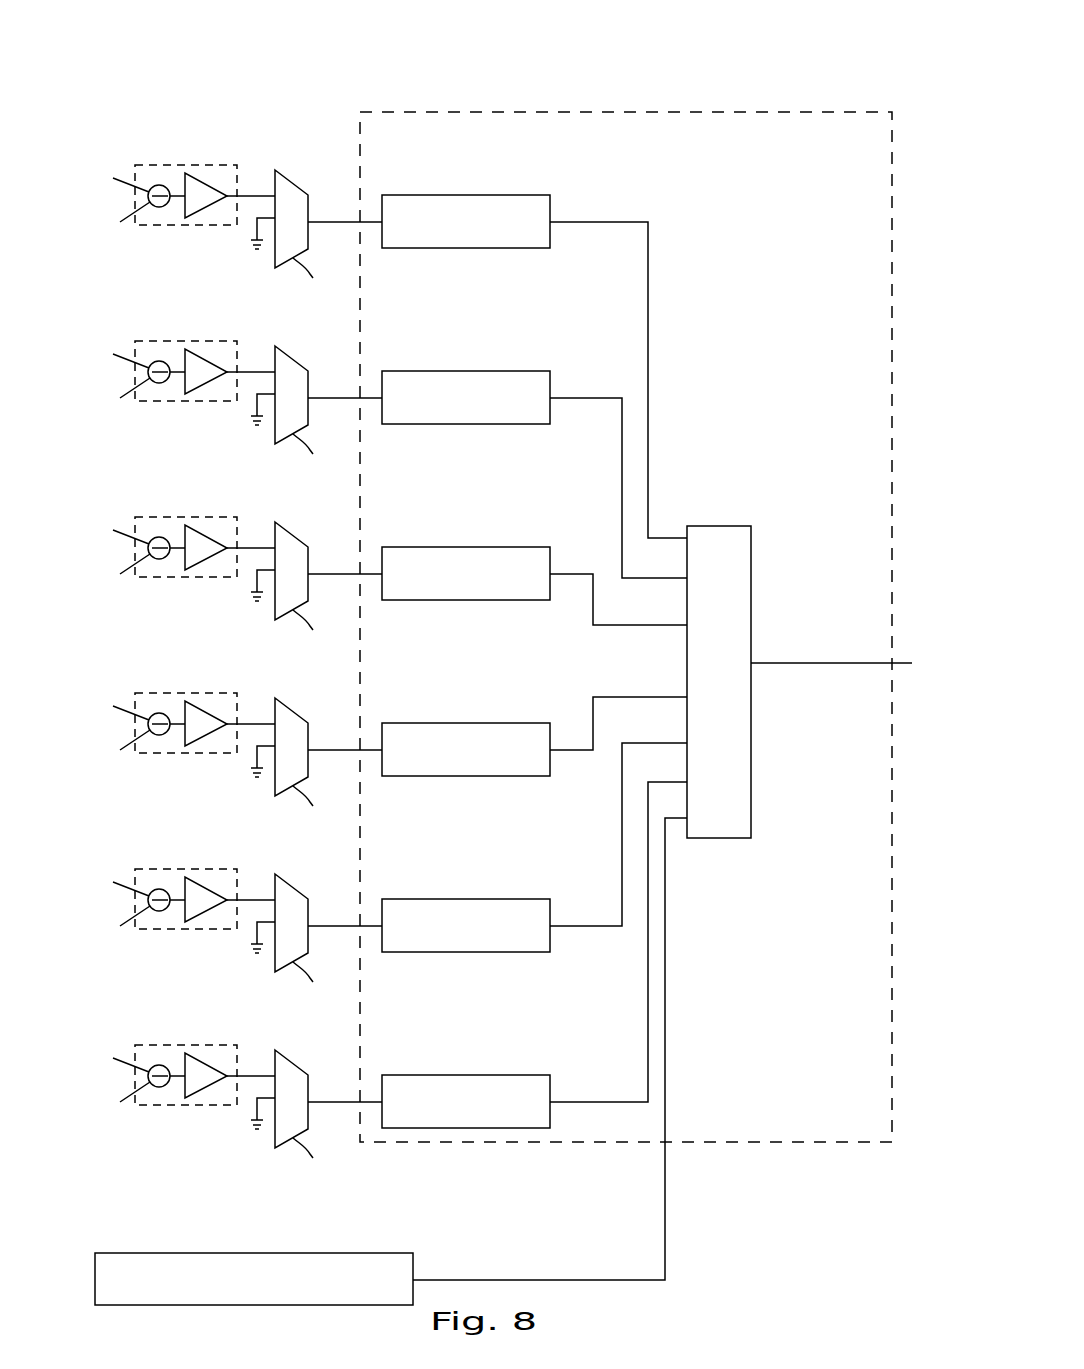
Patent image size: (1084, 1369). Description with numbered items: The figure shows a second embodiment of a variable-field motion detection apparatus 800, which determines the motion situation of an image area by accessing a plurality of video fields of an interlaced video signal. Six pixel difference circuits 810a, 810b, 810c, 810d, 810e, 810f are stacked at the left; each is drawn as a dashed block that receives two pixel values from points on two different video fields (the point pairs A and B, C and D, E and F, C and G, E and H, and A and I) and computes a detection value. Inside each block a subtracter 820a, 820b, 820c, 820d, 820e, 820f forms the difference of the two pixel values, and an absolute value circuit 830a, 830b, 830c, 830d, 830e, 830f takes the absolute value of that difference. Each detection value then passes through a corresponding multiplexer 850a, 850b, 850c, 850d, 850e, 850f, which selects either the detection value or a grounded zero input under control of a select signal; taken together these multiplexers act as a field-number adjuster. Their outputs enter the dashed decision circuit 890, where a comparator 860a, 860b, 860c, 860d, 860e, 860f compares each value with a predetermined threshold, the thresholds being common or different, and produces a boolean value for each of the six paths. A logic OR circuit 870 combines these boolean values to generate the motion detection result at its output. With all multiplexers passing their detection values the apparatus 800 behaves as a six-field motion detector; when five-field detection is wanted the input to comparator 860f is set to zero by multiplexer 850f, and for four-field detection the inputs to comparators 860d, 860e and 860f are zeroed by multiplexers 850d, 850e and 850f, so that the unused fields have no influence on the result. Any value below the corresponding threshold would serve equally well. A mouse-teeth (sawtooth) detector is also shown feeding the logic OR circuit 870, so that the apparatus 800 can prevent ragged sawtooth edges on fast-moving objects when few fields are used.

The variable-field motion detection apparatus 800 is at (771, 79).
The pixel difference circuit 810a is at (170, 165).
The pixel difference circuit 810b is at (186, 341).
The pixel difference circuit 810c is at (186, 517).
The pixel difference circuit 810d is at (186, 693).
The pixel difference circuit 810e is at (186, 869).
The pixel difference circuit 810f is at (186, 1045).
The subtracter 820a is at (155, 187).
The subtracter 820b is at (126, 341).
The subtracter 820c is at (126, 517).
The subtracter 820d is at (126, 693).
The subtracter 820e is at (126, 869).
The subtracter 820f is at (126, 1045).
The absolute value circuit 830a is at (207, 185).
The absolute value circuit 830b is at (228, 336).
The absolute value circuit 830c is at (228, 512).
The absolute value circuit 830d is at (228, 688).
The absolute value circuit 830e is at (228, 864).
The absolute value circuit 830f is at (229, 1040).
The multiplexer 850a is at (287, 179).
The multiplexer 850b is at (276, 376).
The multiplexer 850c is at (276, 552).
The multiplexer 850d is at (276, 728).
The multiplexer 850e is at (276, 904).
The multiplexer 850f is at (276, 1080).
The comparator 860a is at (438, 195).
The comparator 860b is at (466, 368).
The comparator 860c is at (466, 544).
The comparator 860d is at (466, 720).
The comparator 860e is at (466, 896).
The comparator 860f is at (466, 1072).
The logic OR circuit 870 is at (733, 526).
The decision circuit 890 is at (603, 112).